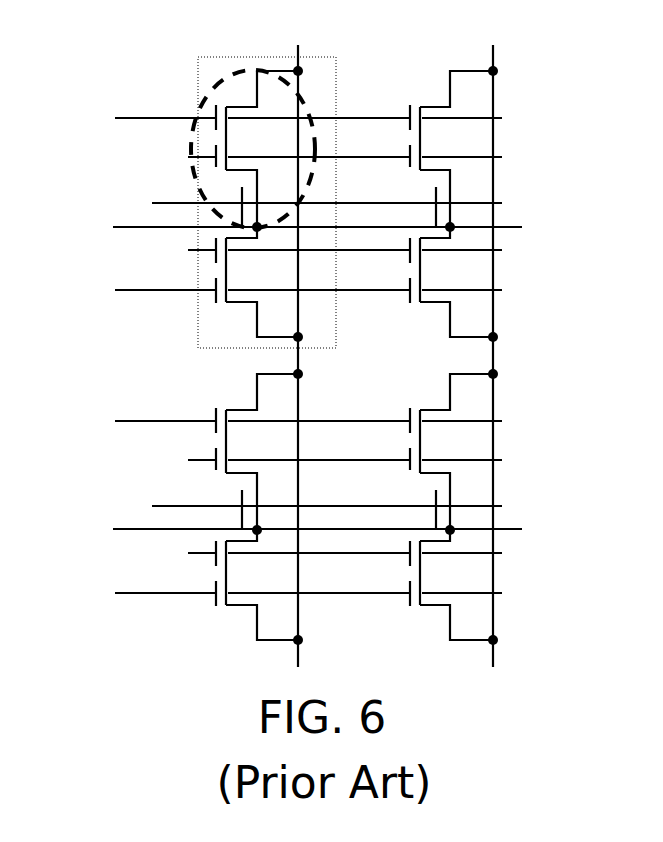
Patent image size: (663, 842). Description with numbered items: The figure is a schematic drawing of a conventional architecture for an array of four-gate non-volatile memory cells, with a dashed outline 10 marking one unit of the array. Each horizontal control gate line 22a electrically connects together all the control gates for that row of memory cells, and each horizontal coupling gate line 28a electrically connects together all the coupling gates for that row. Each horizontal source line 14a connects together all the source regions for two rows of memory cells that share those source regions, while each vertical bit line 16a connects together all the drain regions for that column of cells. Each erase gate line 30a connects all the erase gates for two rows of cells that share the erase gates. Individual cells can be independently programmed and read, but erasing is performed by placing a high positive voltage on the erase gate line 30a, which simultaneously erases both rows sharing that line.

The pixel unit cell 10 is at (206, 126).
The source line 14a is at (350, 381).
The bit line 16a is at (399, 338).
The control gate line 22a is at (278, 355).
The coupling gate line 28a is at (317, 354).
The erase gate line 30a is at (292, 351).